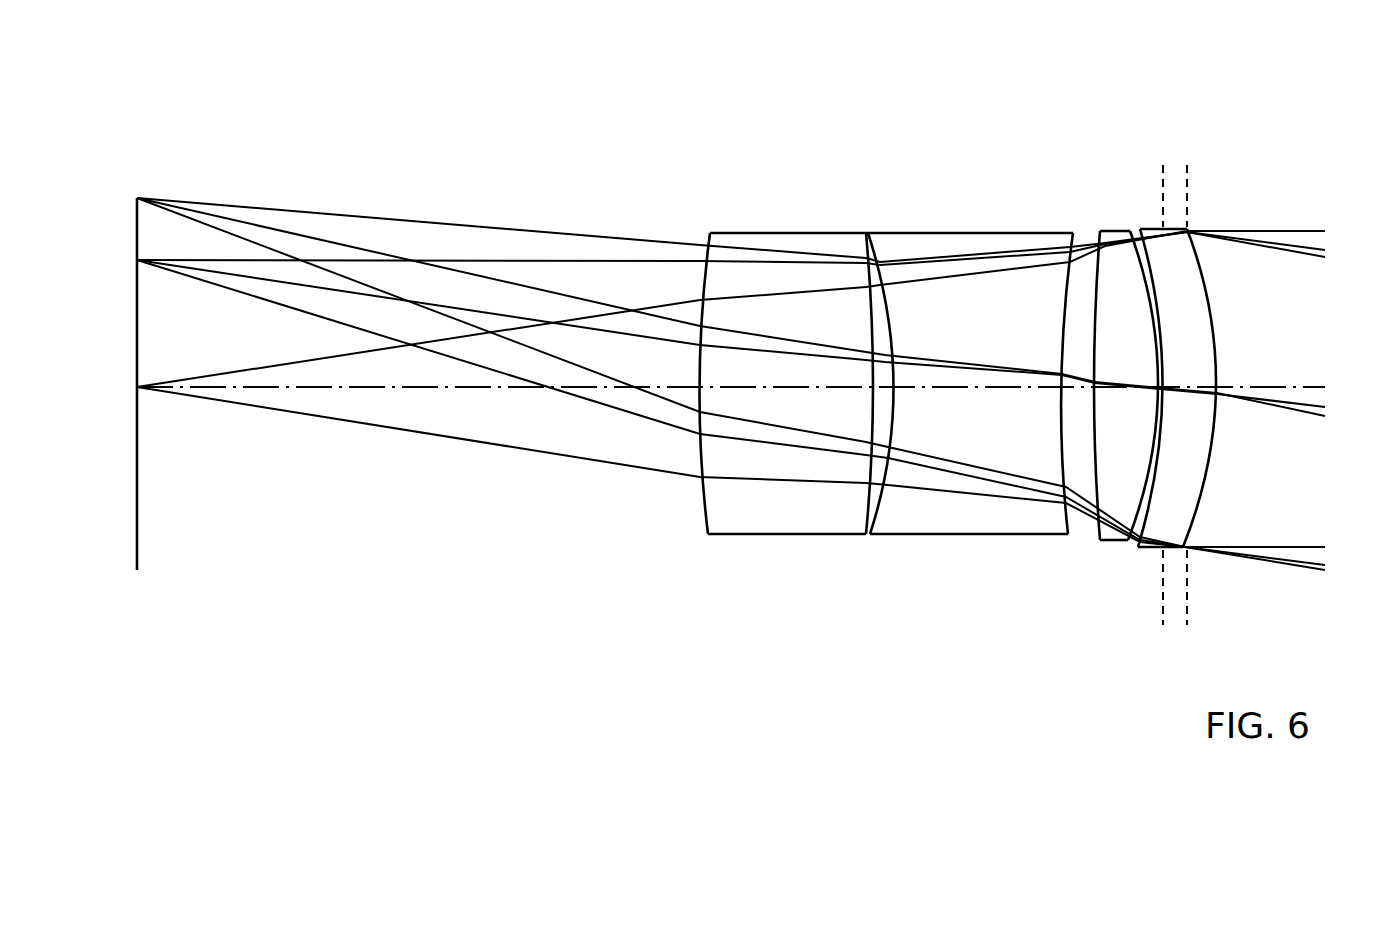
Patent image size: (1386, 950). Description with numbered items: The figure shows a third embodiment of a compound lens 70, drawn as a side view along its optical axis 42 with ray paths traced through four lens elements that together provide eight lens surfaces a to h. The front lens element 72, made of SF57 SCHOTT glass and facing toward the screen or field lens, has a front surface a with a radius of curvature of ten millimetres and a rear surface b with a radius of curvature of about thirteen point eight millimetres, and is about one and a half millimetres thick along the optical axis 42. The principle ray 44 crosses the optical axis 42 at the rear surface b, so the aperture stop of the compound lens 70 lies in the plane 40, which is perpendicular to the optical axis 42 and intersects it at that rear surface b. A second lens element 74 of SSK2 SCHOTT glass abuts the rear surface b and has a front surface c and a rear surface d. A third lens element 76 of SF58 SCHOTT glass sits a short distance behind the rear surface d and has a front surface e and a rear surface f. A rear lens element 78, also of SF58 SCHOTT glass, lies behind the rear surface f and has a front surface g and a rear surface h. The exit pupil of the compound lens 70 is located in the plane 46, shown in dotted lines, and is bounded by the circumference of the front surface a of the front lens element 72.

The plane of the aperture stop 40 is at (1163, 165).
The optical axis 42 is at (1300, 387).
The principle ray 44 is at (500, 280).
The exit pupil plane 46 is at (1187, 165).
The compound lens 70 is at (938, 182).
The front lens element 72 is at (1234, 388).
The second lens element 74 is at (1089, 399).
The third lens element 76 is at (967, 447).
The rear lens element 78 is at (745, 397).
The front surface of the front lens element a is at (1218, 443).
The rear surface of the front lens element b is at (1150, 507).
The front surface of the second lens element c is at (1142, 252).
The rear surface of the second lens element d is at (1100, 252).
The front surface of the third lens element e is at (1063, 452).
The rear surface of the third lens element f is at (898, 440).
The front surface of the rear lens element g is at (866, 280).
The rear surface of the rear lens element h is at (697, 280).